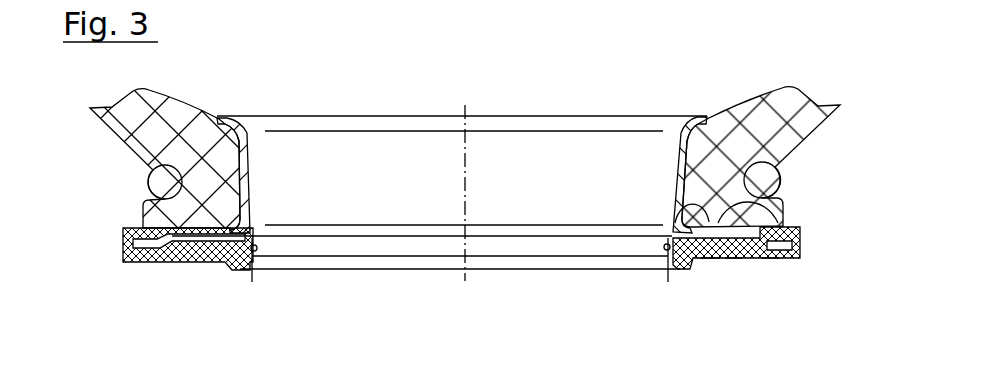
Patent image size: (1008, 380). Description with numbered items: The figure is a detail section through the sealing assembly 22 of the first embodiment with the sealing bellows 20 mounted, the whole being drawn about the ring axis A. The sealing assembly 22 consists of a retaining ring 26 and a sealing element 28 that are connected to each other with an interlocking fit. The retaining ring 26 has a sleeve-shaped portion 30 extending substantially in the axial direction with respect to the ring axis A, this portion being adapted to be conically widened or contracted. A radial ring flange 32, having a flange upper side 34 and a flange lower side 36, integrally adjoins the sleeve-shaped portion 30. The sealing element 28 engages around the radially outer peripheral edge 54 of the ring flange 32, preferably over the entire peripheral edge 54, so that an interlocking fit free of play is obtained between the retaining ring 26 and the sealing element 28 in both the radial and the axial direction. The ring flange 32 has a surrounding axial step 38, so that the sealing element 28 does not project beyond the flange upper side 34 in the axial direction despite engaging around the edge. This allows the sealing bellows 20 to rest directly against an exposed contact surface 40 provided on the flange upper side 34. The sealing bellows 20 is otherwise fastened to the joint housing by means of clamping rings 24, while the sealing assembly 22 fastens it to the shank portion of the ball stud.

The sealing bellows 20 is at (142, 161).
The sealing assembly 22 is at (177, 265).
The clamping rings 24 is at (163, 182).
The retaining ring 26 is at (250, 184).
The sealing element 28 is at (802, 248).
The sleeve-shaped portion 30 is at (680, 181).
The radial ring flange 32 is at (733, 258).
The flange upper side 34 is at (783, 220).
The flange lower side 36 is at (712, 259).
The axial step 38 is at (770, 258).
The contact surface 40 is at (677, 205).
The radially outer peripheral edge 54 is at (122, 243).
The ring axis A is at (464, 206).